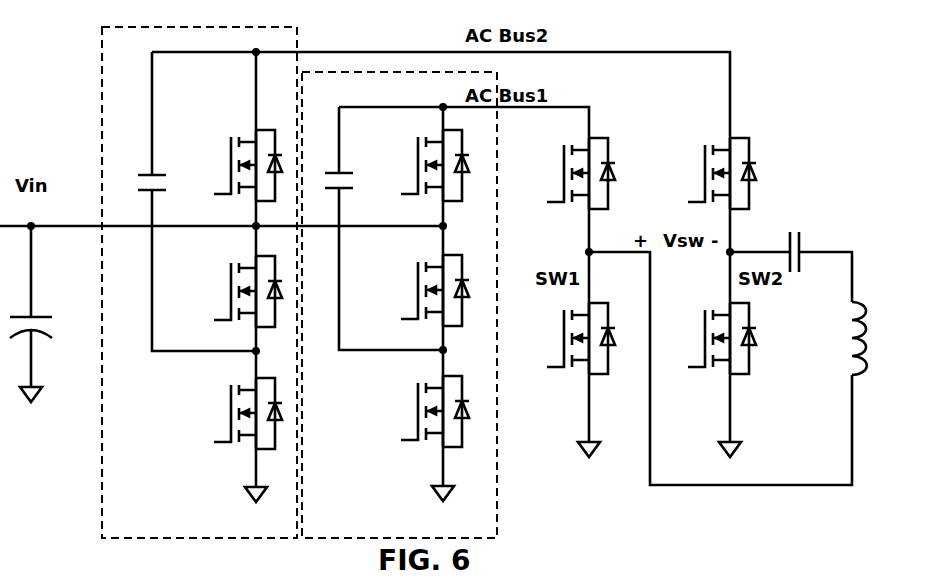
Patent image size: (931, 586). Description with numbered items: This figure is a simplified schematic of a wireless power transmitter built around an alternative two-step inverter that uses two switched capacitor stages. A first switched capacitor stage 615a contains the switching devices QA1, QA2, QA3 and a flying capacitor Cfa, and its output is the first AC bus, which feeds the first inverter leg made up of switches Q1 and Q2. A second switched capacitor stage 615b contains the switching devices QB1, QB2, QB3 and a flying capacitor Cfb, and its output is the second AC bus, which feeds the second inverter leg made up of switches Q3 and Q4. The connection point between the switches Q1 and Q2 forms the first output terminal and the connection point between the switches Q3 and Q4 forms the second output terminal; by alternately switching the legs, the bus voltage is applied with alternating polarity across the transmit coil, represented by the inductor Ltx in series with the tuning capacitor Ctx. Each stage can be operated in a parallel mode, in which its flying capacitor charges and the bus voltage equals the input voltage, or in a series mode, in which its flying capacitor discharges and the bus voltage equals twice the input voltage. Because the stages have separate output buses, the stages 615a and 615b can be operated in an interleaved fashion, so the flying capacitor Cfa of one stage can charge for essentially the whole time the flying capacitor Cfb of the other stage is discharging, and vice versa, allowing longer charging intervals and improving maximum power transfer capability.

The first switched capacitor stage 615a is at (438, 305).
The second switched capacitor stage 615b is at (159, 282).
The flying capacitor Cfb is at (184, 201).
The flying capacitor Cfa is at (374, 228).
The switching device QB1 is at (233, 165).
The switching device QB2 is at (232, 291).
The switching device QB3 is at (232, 413).
The switching device QA1 is at (418, 165).
The switching device QA2 is at (418, 290).
The switching device QA3 is at (418, 411).
The switch Q1 is at (573, 173).
The switch Q2 is at (572, 338).
The switch Q3 is at (714, 173).
The switch Q4 is at (715, 338).
The tuning capacitor Ctx is at (791, 255).
The inductor Ltx is at (842, 338).